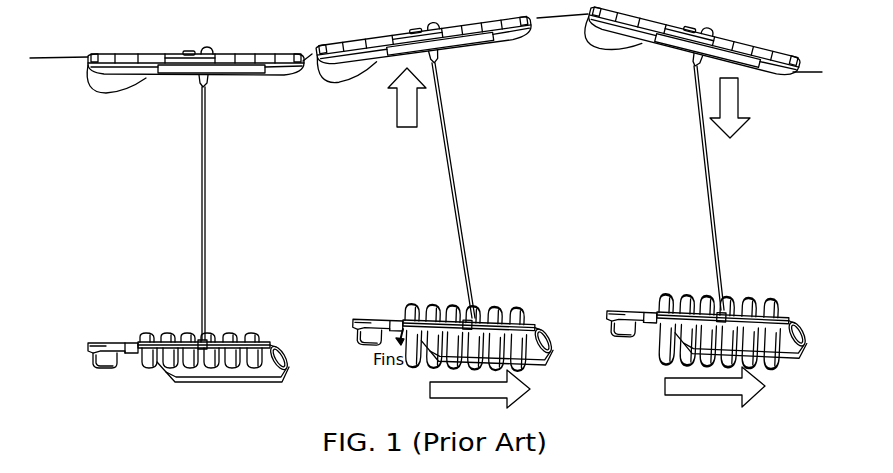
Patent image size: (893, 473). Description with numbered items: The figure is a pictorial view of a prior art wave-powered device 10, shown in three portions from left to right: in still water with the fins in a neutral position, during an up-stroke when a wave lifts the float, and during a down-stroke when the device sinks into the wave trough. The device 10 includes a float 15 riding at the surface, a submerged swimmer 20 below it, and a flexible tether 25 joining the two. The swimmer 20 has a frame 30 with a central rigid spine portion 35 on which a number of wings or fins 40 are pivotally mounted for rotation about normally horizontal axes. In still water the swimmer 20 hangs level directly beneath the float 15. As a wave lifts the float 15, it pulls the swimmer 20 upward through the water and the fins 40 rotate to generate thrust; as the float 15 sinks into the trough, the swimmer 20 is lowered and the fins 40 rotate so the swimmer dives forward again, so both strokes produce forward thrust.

The wave-powered device 10 is at (98, 280).
The float 15 is at (150, 52).
The submerged swimmer 20 is at (137, 370).
The flexible tether 25 is at (200, 206).
The frame 30 is at (287, 355).
The central rigid spine portion 35 is at (245, 341).
The fins 40 is at (258, 368).